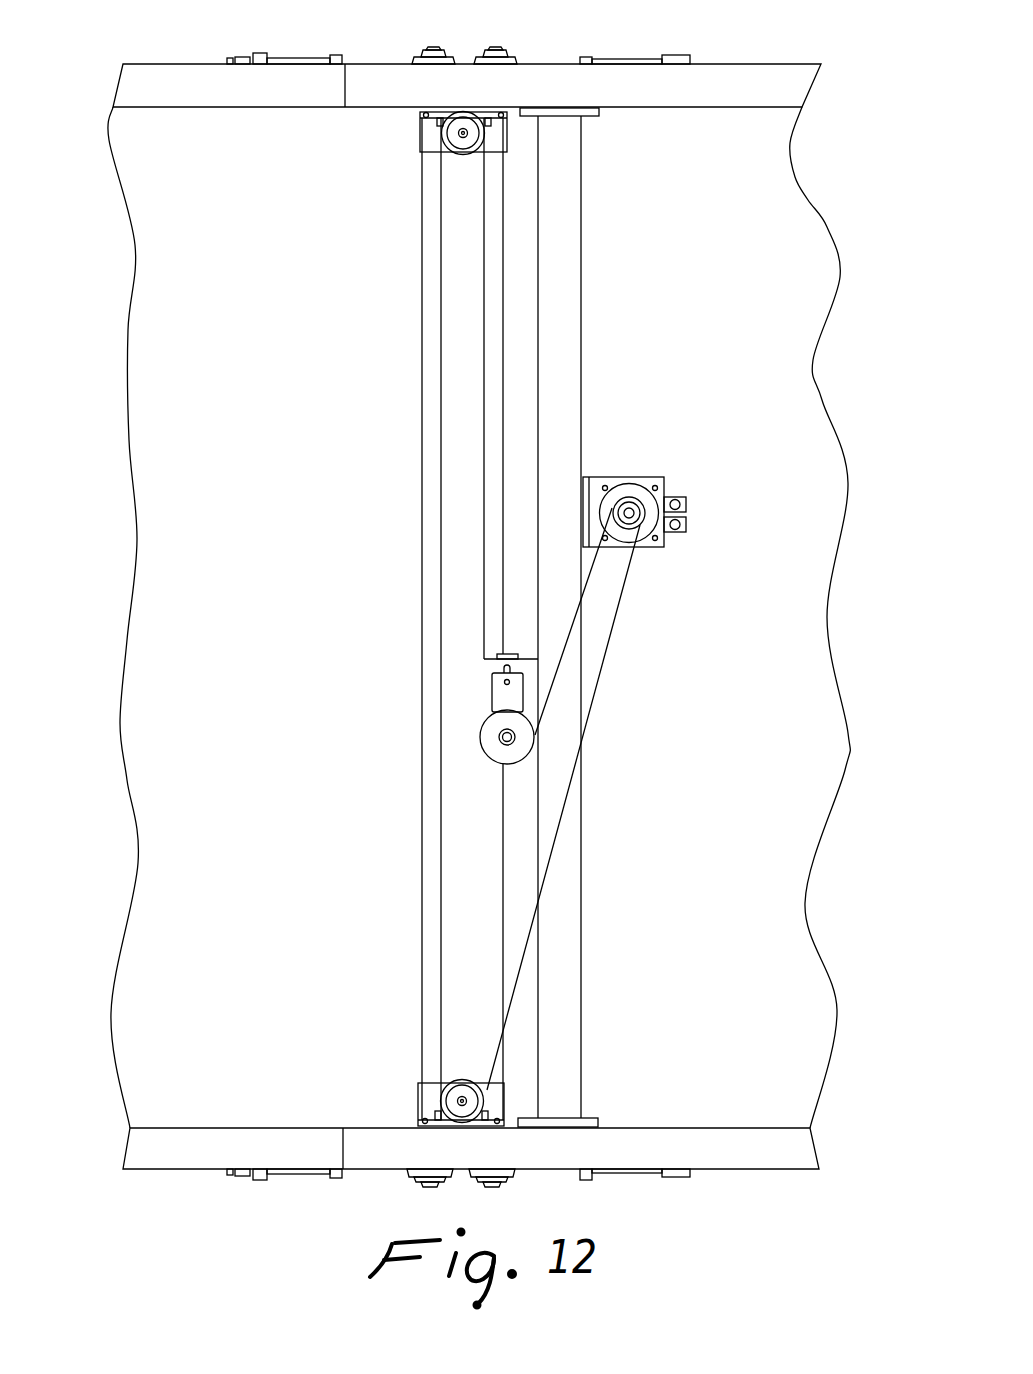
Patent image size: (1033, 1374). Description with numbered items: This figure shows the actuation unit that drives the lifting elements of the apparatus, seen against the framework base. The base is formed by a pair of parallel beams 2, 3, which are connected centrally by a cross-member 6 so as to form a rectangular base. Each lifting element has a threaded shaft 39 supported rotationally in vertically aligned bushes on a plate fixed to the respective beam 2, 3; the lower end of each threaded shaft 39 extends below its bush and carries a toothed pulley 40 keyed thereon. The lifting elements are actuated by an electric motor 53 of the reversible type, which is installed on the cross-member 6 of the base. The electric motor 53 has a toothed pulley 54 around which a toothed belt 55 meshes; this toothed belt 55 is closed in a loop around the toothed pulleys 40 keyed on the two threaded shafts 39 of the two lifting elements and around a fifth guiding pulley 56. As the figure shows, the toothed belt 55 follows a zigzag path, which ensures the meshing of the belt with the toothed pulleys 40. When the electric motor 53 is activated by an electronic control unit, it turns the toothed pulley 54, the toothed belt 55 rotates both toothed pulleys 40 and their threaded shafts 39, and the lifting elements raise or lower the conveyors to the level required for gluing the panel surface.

The beam 2 is at (207, 90).
The beam 3 is at (290, 1150).
The cross-member 6 is at (570, 240).
The threaded shaft 39 is at (460, 133).
The toothed pulley 40 is at (460, 153).
The electric motor 53 is at (635, 490).
The toothed pulley 54 is at (627, 523).
The toothed belt 55 is at (605, 668).
The guiding pulley 56 is at (492, 738).